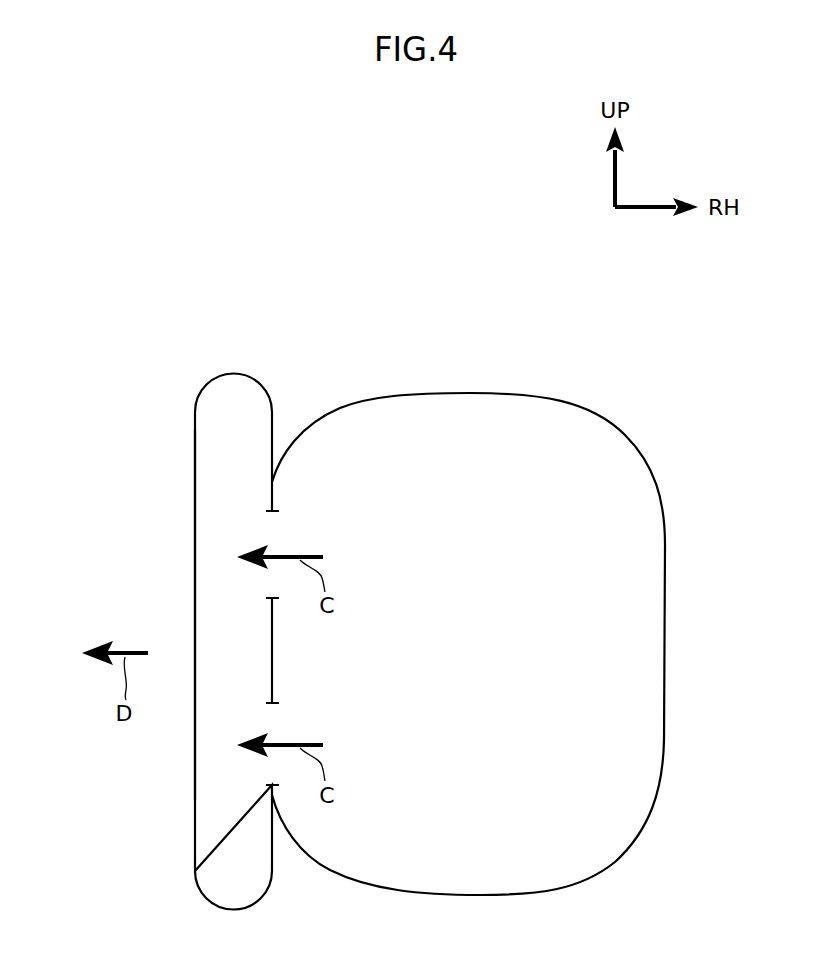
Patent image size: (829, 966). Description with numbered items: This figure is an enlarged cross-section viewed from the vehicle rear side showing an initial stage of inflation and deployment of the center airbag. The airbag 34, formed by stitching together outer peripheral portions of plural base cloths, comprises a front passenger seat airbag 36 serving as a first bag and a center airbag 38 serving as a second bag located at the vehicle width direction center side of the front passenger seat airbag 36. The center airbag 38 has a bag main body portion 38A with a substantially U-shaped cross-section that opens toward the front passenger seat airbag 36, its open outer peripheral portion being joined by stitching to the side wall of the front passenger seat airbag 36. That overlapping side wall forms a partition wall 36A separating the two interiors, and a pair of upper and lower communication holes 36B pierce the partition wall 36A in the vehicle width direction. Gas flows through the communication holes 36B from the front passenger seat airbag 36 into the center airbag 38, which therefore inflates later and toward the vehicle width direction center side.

The airbag 34 is at (340, 277).
The front passenger seat airbag 36 is at (457, 392).
The partition wall 36A is at (274, 656).
The communication holes 36B is at (270, 533).
The center airbag 38 is at (252, 374).
The bag main body portion 38A is at (195, 506).